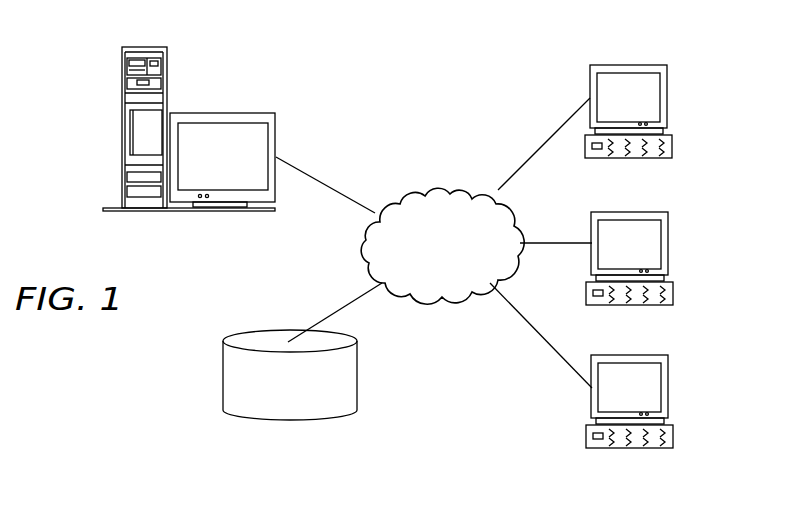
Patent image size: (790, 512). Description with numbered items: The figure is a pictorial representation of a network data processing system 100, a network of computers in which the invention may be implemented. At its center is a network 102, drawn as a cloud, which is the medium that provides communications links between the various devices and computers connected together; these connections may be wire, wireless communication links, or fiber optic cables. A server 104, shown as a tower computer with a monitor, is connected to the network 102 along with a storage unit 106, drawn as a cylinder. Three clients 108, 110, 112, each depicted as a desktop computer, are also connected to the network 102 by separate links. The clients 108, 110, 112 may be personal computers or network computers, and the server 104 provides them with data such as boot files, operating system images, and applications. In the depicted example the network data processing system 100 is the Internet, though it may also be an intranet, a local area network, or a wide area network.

The network data processing system 100 is at (493, 81).
The network 102 is at (412, 190).
The server 104 is at (121, 133).
The storage unit 106 is at (222, 372).
The client 108 is at (667, 98).
The client 110 is at (667, 245).
The client 112 is at (667, 385).